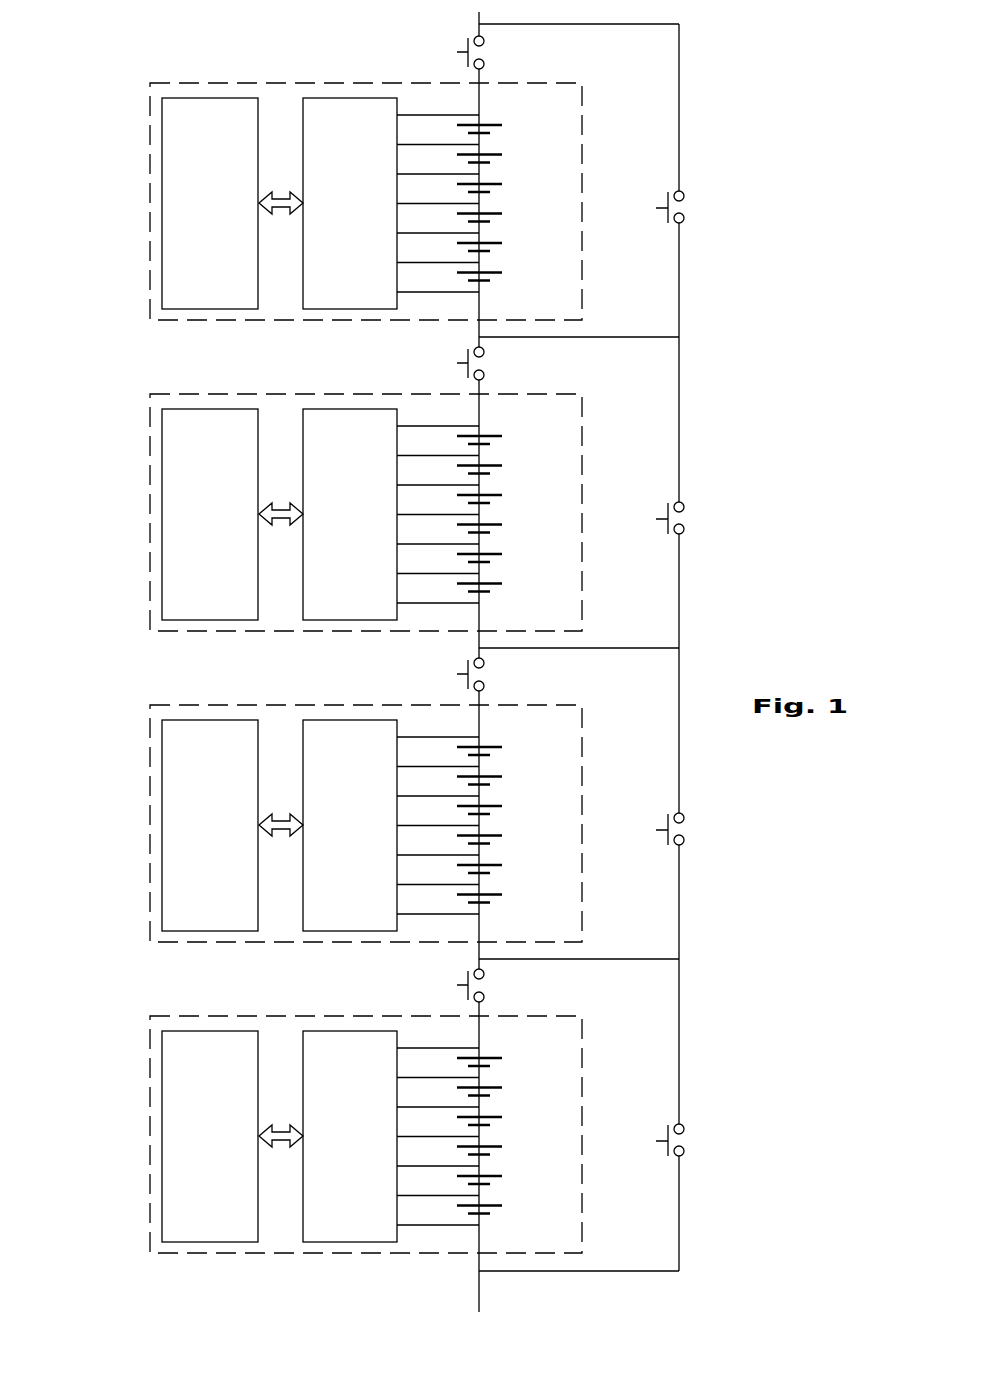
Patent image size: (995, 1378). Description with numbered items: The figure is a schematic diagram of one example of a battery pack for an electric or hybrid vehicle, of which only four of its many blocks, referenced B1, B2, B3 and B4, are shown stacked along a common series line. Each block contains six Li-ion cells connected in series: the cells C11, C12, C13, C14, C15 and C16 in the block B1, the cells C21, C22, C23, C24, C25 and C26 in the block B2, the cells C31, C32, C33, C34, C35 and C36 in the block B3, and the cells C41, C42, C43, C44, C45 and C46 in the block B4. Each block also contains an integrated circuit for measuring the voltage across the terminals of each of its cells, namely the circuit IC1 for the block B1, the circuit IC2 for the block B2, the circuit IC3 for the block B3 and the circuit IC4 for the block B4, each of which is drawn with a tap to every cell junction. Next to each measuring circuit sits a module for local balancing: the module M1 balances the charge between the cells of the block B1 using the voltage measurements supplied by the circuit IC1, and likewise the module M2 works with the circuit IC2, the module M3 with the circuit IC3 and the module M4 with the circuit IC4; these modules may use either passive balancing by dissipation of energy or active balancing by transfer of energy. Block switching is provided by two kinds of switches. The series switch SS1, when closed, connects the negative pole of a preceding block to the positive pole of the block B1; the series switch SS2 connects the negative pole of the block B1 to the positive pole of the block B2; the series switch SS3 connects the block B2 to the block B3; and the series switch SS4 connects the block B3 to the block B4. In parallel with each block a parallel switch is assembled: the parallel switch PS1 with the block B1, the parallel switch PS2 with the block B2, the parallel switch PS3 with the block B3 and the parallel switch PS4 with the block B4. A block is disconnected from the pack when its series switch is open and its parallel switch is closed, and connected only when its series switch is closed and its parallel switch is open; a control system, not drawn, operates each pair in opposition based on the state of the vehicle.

The block B1 is at (150, 202).
The block B2 is at (313, 512).
The block B3 is at (313, 823).
The block B4 is at (313, 1134).
The module for local balancing M1 is at (210, 203).
The module for local balancing M2 is at (210, 514).
The module for local balancing M3 is at (210, 825).
The module for local balancing M4 is at (210, 1136).
The integrated circuit IC1 is at (350, 203).
The integrated circuit IC2 is at (350, 514).
The integrated circuit IC3 is at (350, 825).
The integrated circuit IC4 is at (350, 1136).
The Li-ion cell C11 is at (503, 126).
The Li-ion cell C12 is at (503, 156).
The Li-ion cell C13 is at (503, 185).
The Li-ion cell C14 is at (503, 215).
The Li-ion cell C15 is at (503, 244).
The Li-ion cell C16 is at (503, 274).
The Li-ion cell C21 is at (503, 437).
The Li-ion cell C22 is at (503, 467).
The Li-ion cell C23 is at (503, 496).
The Li-ion cell C24 is at (503, 526).
The Li-ion cell C25 is at (503, 555).
The Li-ion cell C26 is at (503, 585).
The Li-ion cell C31 is at (503, 748).
The Li-ion cell C32 is at (503, 778).
The Li-ion cell C33 is at (503, 807).
The Li-ion cell C34 is at (503, 837).
The Li-ion cell C35 is at (503, 866).
The Li-ion cell C36 is at (503, 896).
The Li-ion cell C41 is at (503, 1059).
The Li-ion cell C42 is at (503, 1089).
The Li-ion cell C43 is at (503, 1118).
The Li-ion cell C44 is at (503, 1148).
The Li-ion cell C45 is at (503, 1177).
The Li-ion cell C46 is at (503, 1207).
The series switch SS1 is at (447, 52).
The series switch SS2 is at (447, 363).
The series switch SS3 is at (447, 674).
The series switch SS4 is at (447, 985).
The parallel switch PS1 is at (643, 207).
The parallel switch PS2 is at (643, 518).
The parallel switch PS3 is at (643, 829).
The parallel switch PS4 is at (643, 1140).